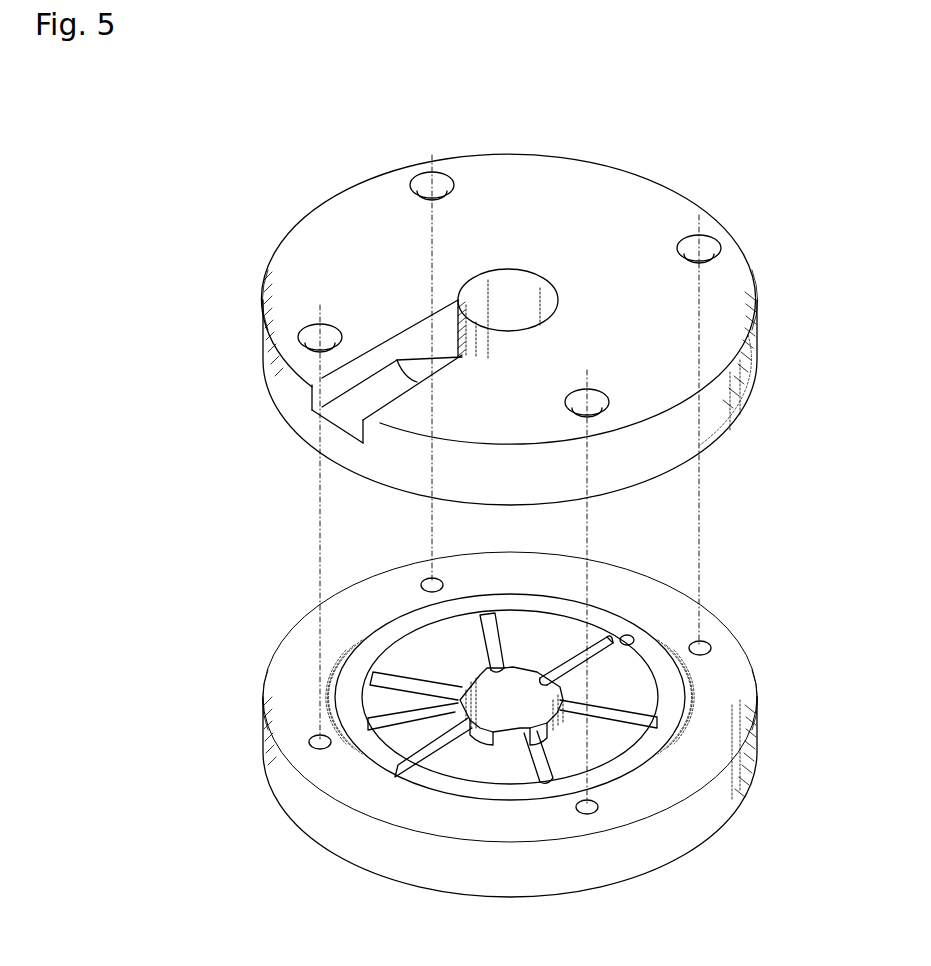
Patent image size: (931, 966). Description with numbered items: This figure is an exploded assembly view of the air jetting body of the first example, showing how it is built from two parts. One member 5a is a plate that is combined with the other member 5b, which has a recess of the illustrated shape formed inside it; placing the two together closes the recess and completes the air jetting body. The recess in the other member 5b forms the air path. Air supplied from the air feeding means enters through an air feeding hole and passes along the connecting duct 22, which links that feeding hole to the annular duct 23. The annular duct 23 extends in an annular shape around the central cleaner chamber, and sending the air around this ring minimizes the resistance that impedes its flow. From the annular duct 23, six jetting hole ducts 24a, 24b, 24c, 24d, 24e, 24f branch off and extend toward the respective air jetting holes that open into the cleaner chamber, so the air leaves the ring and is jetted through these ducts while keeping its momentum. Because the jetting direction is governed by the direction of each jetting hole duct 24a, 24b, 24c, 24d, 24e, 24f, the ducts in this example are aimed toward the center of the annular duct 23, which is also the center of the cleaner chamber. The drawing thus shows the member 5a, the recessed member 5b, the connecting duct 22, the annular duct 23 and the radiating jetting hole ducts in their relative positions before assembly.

The one member 5a is at (605, 212).
The other member 5b is at (303, 795).
The connecting duct 22 is at (633, 637).
The annular duct 23 is at (640, 735).
The jetting hole duct 24a is at (600, 720).
The jetting hole duct 24b is at (537, 785).
The jetting hole duct 24c is at (432, 700).
The jetting hole duct 24d is at (407, 667).
The jetting hole duct 24e is at (492, 640).
The jetting hole duct 24f is at (565, 655).